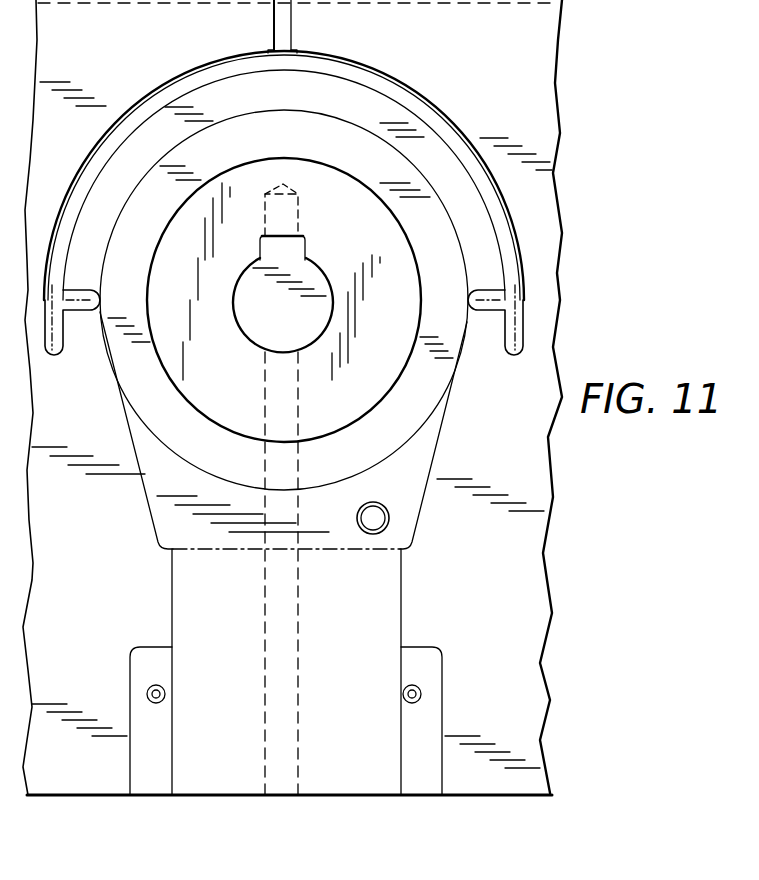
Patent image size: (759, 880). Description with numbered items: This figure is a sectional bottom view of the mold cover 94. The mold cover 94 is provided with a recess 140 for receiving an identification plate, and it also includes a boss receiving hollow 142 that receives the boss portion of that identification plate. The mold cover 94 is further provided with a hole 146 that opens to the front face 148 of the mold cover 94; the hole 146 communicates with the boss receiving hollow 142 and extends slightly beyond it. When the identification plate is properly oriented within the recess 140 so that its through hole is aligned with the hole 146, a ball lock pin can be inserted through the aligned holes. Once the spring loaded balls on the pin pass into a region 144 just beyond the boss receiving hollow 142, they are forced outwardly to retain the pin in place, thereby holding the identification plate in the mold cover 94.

The mold cover 94 is at (555, 83).
The recess 140 is at (403, 272).
The boss receiving hollow 142 is at (315, 315).
The region 144 is at (303, 247).
The hole 146 is at (267, 768).
The front face 148 is at (355, 797).